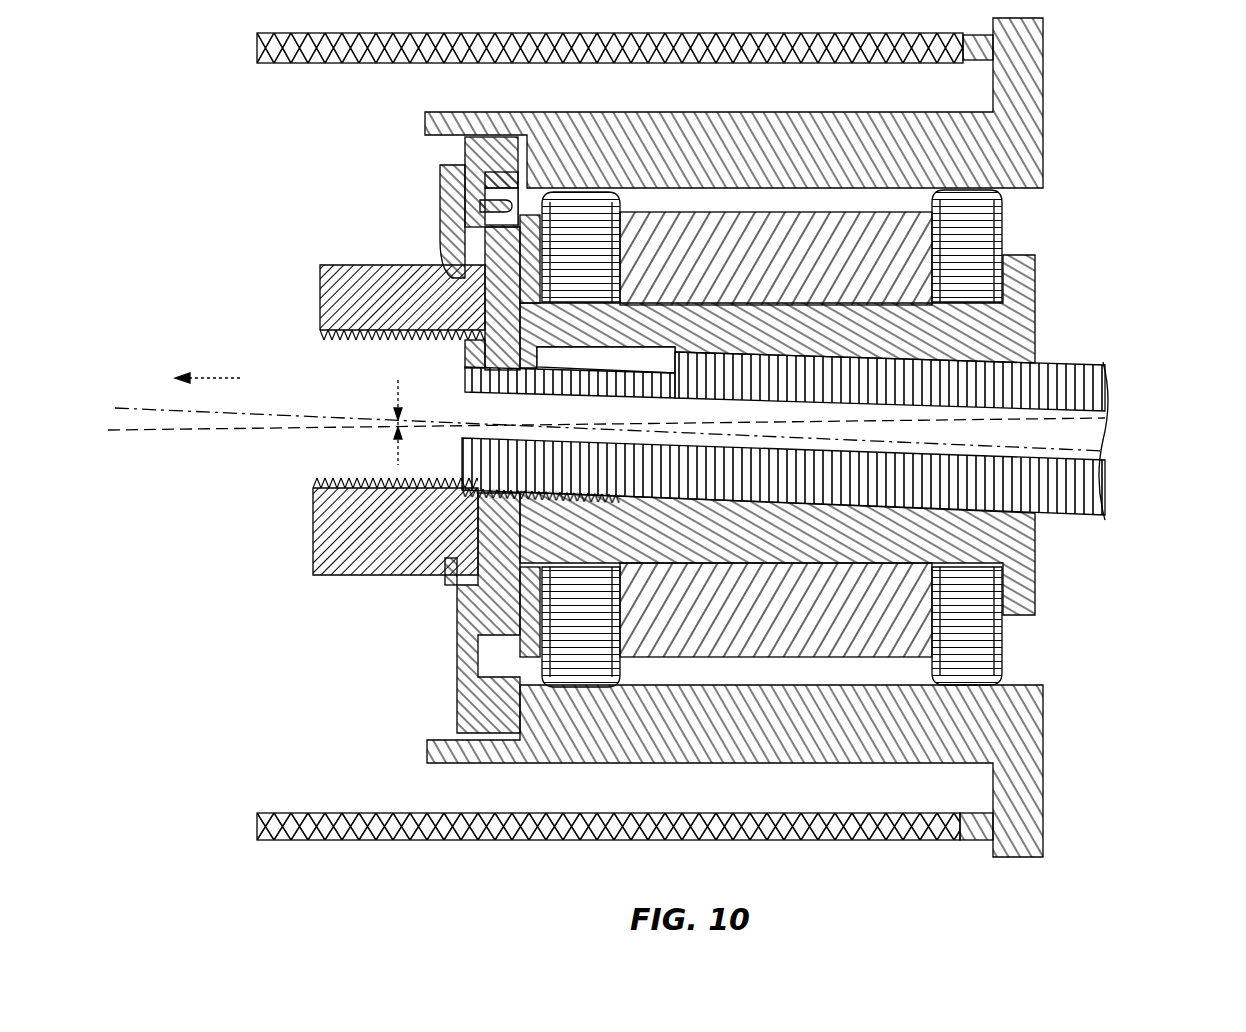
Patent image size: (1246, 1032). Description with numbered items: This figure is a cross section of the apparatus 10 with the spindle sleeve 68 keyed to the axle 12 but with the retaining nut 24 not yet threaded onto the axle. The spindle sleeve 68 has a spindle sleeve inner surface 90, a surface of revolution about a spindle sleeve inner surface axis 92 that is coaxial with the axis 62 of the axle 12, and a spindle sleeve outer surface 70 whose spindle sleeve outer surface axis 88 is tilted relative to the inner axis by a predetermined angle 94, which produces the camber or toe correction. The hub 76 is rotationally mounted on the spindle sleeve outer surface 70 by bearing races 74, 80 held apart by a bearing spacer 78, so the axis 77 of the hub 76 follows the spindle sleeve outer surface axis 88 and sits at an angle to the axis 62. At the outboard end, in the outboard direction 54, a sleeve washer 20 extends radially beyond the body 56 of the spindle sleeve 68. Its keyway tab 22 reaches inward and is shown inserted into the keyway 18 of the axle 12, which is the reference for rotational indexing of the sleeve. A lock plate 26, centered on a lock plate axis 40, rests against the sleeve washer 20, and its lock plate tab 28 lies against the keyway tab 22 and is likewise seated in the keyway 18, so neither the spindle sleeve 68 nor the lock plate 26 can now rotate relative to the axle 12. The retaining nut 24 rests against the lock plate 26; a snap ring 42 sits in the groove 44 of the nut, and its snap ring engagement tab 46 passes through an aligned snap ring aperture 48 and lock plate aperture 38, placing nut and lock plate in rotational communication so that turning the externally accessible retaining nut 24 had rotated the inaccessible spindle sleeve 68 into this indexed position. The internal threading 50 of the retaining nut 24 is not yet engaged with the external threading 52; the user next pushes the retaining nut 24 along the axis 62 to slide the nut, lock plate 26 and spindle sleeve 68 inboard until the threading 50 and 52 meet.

The apparatus 10 is at (1145, 68).
The axle 12 is at (1050, 365).
The keyway 18 is at (612, 360).
The sleeve washer 20 is at (545, 605).
The keyway tab 22 is at (545, 352).
The retaining nut 24 is at (340, 577).
The lock plate 26 is at (483, 583).
The lock plate tab 28 is at (490, 350).
The lock plate aperture 38 is at (515, 202).
The lock plate axis 40 is at (180, 430).
The snap ring 42 is at (465, 162).
The groove 44 is at (447, 272).
The snap ring engagement tab 46 is at (478, 205).
The snap ring aperture 48 is at (478, 217).
The internal threading 50 is at (398, 344).
The external threading 52 is at (596, 500).
The outboard direction 54 is at (222, 378).
The body 56 is at (876, 344).
The axis 62 is at (240, 410).
The spindle sleeve 68 is at (1048, 618).
The spindle sleeve outer surface 70 is at (768, 303).
The bearing race 74 is at (951, 259).
The hub 76 is at (1033, 745).
The axis of the hub 77 is at (700, 420).
The bearing spacer 78 is at (666, 264).
The bearing race 80 is at (566, 264).
The spindle sleeve outer surface axis 88 is at (1032, 420).
The spindle sleeve inner surface 90 is at (767, 361).
The spindle sleeve inner surface axis 92 is at (1050, 452).
The angle 94 is at (400, 462).